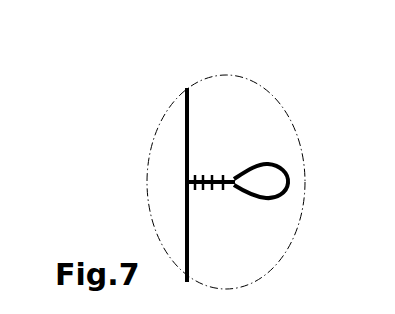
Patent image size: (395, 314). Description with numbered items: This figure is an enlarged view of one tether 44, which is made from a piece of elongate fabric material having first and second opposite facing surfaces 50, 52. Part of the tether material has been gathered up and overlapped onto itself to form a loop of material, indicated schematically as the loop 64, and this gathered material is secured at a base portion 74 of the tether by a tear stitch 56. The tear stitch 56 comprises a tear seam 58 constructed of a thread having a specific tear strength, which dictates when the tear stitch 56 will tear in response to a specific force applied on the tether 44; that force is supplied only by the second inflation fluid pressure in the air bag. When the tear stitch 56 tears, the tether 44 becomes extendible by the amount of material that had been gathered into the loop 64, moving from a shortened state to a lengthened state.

The tether 44 is at (187, 88).
The first facing surface 50 is at (190, 112).
The second facing surface 52 is at (187, 133).
The tear stitch 56 is at (218, 188).
The tear seam 58 is at (205, 177).
The loop 64 is at (286, 171).
The base portion 74 is at (187, 236).